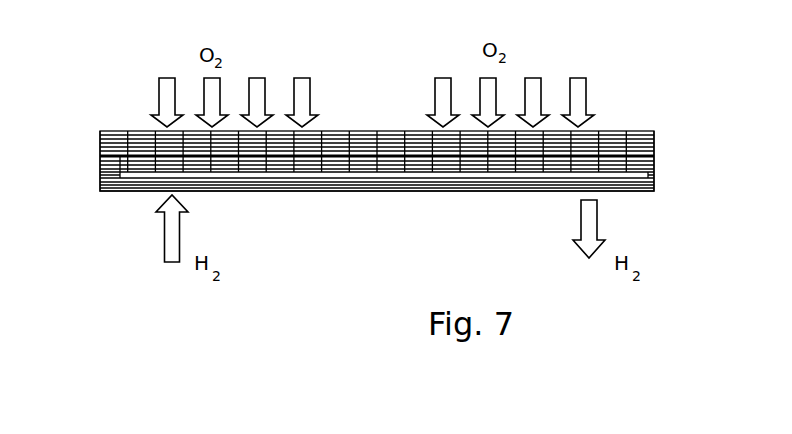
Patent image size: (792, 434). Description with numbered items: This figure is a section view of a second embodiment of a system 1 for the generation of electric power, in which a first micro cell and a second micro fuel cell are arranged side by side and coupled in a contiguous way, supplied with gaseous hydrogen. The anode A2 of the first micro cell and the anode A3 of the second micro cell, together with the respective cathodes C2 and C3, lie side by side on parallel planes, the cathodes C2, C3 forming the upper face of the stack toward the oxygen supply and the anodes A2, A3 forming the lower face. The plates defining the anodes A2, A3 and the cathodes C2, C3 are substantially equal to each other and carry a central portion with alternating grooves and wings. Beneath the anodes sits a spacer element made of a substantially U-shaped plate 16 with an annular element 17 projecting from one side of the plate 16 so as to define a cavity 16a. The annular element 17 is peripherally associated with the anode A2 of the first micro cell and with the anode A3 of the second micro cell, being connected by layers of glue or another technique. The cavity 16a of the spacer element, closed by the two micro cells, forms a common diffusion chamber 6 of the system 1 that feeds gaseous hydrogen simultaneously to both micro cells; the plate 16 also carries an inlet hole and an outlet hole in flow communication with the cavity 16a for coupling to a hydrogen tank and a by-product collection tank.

The system for the generation of electric power 1 is at (366, 85).
The cathode of the first micro cell C2 is at (99, 147).
The cathode of the second micro cell C3 is at (657, 133).
The anode of the first micro cell A2 is at (99, 168).
The anode of the second micro cell A3 is at (656, 160).
The common diffusion chamber 6 is at (420, 185).
The plate 16 is at (263, 192).
The cavity 16a is at (493, 185).
The annular element 17 is at (656, 186).